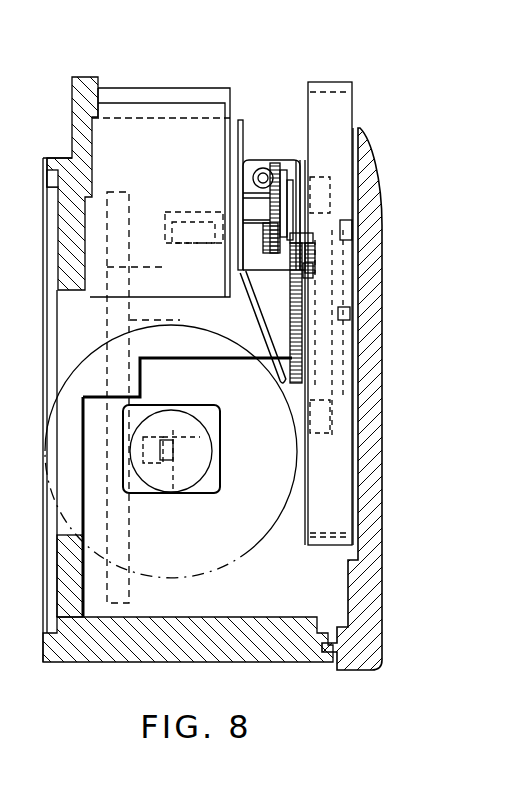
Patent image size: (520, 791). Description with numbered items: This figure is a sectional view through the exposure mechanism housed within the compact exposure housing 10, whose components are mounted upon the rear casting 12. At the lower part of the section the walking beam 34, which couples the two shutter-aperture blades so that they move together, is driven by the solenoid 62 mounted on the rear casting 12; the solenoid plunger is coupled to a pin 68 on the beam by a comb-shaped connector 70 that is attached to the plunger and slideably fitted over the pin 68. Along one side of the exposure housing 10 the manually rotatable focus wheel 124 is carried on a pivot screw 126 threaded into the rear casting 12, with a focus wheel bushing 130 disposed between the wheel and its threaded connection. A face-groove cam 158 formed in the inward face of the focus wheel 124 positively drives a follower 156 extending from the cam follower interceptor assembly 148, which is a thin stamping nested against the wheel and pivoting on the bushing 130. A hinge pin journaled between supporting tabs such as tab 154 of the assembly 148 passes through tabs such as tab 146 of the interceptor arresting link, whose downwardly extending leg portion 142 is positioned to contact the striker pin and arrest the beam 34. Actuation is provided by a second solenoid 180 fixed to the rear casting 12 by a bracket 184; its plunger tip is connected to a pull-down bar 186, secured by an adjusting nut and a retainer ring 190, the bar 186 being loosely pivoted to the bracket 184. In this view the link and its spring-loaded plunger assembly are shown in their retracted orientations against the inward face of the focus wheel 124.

The exposure housing 10 is at (398, 131).
The rear casting 12 is at (92, 77).
The walking beam 34 is at (130, 532).
The solenoid 62 is at (240, 566).
The pin 68 is at (200, 430).
The comb-shaped connector 70 is at (212, 490).
The focus wheel 124 is at (340, 112).
The pivot screw 126 is at (350, 323).
The focus wheel bushing 130 is at (354, 357).
The leg portion 142 is at (268, 356).
The tab 146 is at (252, 160).
The interceptor assembly 148 is at (325, 245).
The supporting tab 154 is at (296, 160).
The follower 156 is at (310, 277).
The face-groove cam 158 is at (362, 170).
The solenoid 180 is at (240, 157).
The bracket 184 is at (142, 92).
The pull-down bar 186 is at (293, 160).
The retainer ring 190 is at (262, 168).